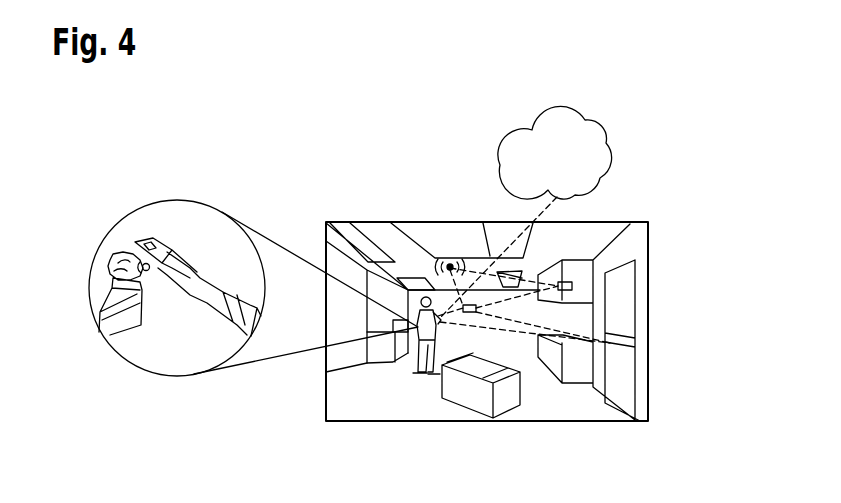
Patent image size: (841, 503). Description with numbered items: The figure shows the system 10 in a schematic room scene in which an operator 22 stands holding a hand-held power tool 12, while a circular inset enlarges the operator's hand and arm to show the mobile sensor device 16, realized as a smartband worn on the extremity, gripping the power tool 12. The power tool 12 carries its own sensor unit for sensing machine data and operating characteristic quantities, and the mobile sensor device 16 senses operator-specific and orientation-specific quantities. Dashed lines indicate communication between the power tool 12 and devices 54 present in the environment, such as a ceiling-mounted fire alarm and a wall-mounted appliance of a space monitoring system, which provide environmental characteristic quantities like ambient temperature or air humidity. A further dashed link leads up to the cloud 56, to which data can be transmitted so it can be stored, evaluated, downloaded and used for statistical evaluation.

The system 10 is at (225, 202).
The power tool 12 is at (183, 256).
The mobile sensor device 16 is at (108, 296).
The operator 22 is at (429, 375).
The devices 54 is at (450, 266).
The cloud 56 is at (552, 137).